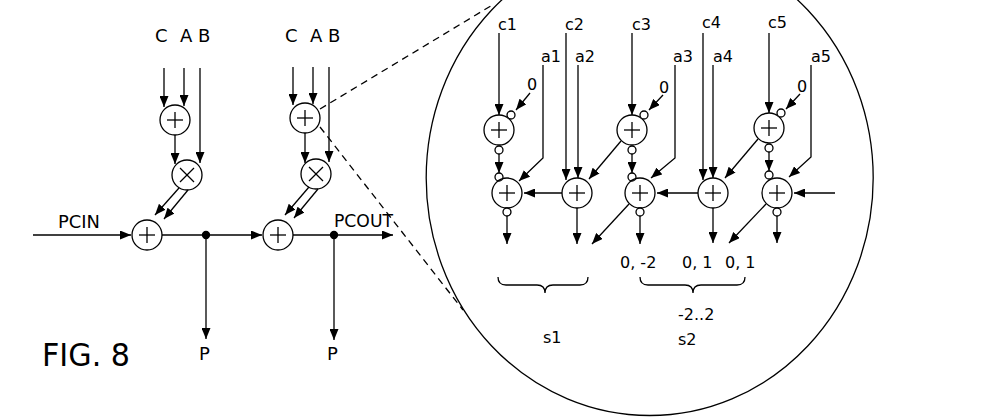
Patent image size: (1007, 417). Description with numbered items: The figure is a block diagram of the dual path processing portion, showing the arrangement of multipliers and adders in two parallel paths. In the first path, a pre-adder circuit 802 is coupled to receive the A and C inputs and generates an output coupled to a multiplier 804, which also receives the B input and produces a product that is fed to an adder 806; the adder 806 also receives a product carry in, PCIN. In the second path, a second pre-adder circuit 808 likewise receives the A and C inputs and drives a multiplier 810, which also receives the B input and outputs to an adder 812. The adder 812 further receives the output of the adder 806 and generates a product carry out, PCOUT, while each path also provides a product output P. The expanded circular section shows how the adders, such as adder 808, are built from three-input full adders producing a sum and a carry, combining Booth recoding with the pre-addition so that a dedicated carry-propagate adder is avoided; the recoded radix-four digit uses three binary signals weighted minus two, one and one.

The pre-adder circuit 802 is at (190, 110).
The multiplier 804 is at (202, 167).
The adder 806 is at (162, 224).
The second pre-adder circuit 808 is at (319, 106).
The multiplier 810 is at (331, 167).
The adder 812 is at (294, 226).